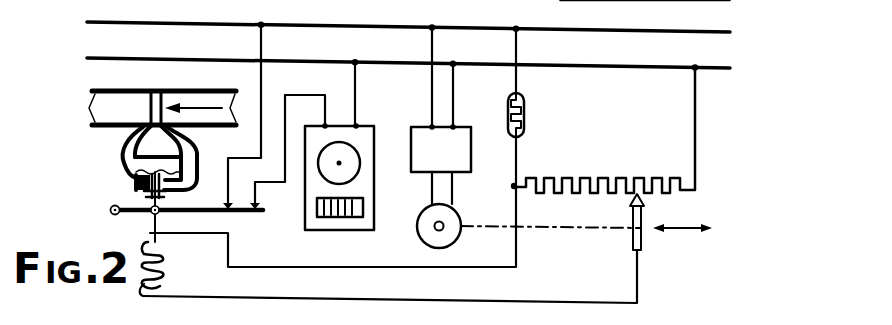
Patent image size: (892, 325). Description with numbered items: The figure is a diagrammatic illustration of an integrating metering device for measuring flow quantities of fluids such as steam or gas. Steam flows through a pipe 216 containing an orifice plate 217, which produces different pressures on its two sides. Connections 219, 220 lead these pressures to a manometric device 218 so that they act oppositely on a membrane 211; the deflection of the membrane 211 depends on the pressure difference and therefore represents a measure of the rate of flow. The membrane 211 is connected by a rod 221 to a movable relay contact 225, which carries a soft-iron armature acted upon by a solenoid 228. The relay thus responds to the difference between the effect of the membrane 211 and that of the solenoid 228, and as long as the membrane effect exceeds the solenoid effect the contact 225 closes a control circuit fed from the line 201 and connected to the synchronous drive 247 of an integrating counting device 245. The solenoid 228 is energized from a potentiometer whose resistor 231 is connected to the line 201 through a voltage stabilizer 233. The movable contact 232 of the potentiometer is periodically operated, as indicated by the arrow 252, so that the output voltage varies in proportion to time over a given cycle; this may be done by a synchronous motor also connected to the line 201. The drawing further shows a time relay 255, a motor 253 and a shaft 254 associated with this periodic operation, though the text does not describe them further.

The line 201 is at (217, 59).
The pipe 216 is at (95, 97).
The orifice plate 217 is at (163, 96).
The connection 219 is at (120, 148).
The connection 220 is at (196, 148).
The manometric device 218 is at (133, 172).
The membrane 211 is at (134, 183).
The rod 221 is at (160, 209).
The movable relay contact 225 is at (244, 220).
The solenoid 228 is at (160, 263).
The integrating counting device 245 is at (347, 230).
The synchronous drive 247 is at (352, 168).
The time relay 255 is at (419, 127).
The drive motor 253 is at (456, 241).
The drive shaft 254 is at (584, 232).
The voltage stabilizer 233 is at (527, 111).
The resistor 231 is at (601, 168).
The movable contact 232 is at (633, 202).
The arrow 252 is at (683, 233).